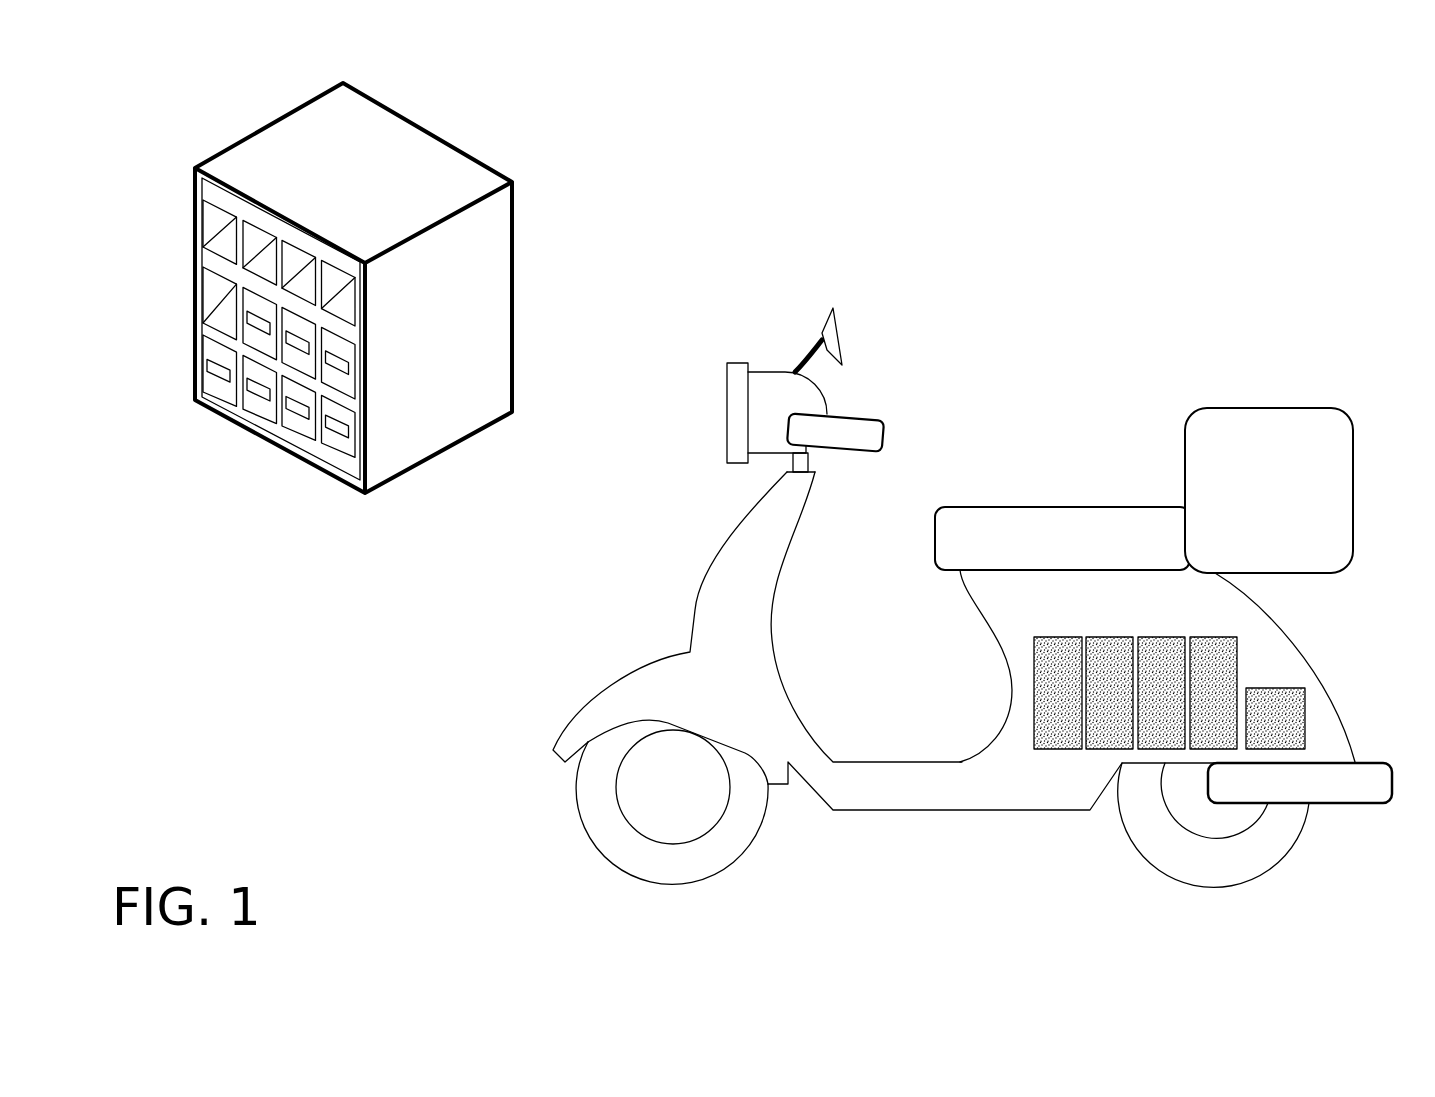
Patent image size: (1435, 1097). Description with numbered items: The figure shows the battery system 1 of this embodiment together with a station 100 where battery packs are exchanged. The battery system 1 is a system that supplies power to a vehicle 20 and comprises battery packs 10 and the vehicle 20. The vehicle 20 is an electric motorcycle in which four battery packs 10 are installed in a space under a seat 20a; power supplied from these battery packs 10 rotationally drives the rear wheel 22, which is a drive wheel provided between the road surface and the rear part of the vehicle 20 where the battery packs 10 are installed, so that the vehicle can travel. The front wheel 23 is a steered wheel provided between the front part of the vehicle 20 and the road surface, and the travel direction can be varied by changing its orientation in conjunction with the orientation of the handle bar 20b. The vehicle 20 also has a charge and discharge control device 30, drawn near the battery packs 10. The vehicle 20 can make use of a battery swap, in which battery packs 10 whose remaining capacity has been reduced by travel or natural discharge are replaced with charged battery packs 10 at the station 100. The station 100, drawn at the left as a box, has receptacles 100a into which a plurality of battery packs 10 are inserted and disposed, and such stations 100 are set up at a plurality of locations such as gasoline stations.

The battery system 1 is at (872, 180).
The battery pack 10 is at (342, 438).
The vehicle 20 is at (707, 318).
The seat 20a is at (1000, 522).
The handle bar 20b is at (858, 430).
The rear wheel 22 is at (1233, 868).
The front wheel 23 is at (685, 867).
The charge and discharge control device 30 is at (1268, 720).
The station 100 is at (293, 101).
The receptacle 100a is at (212, 227).